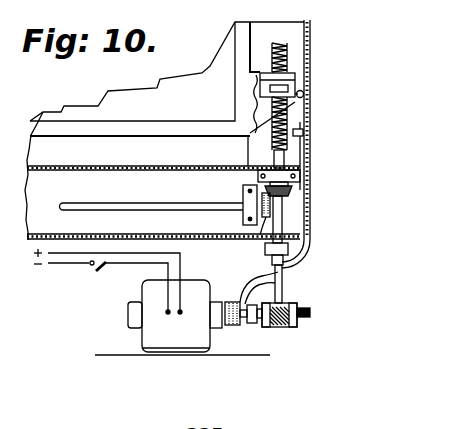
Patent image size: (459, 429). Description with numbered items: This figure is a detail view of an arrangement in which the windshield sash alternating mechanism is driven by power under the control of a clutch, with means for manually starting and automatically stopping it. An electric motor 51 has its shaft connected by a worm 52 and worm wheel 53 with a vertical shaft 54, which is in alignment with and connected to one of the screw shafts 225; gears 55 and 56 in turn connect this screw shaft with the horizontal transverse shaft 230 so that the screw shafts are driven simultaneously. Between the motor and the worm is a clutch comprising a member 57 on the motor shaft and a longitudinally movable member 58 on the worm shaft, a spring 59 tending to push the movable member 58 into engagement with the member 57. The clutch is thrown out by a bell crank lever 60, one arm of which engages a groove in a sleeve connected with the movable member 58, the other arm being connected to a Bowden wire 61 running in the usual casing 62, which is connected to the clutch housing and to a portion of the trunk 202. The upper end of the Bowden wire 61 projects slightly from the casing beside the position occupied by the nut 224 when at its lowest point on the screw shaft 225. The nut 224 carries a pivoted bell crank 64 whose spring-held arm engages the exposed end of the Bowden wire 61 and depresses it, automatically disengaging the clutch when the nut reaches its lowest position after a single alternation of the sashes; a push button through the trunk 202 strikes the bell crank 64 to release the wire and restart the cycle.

The electric motor 51 is at (148, 292).
The worm 52 is at (278, 325).
The worm wheel 53 is at (308, 312).
The vertical shaft 54 is at (293, 270).
The gear 55 is at (263, 230).
The gear 56 is at (293, 193).
The clutch member 57 is at (232, 326).
The longitudinally movable clutch member 58 is at (239, 324).
The spring 59 is at (253, 320).
The bell crank lever 60 is at (260, 293).
The Bowden wire 61 is at (302, 124).
The casing 62 is at (306, 250).
The pivoted bell crank 64 is at (304, 92).
The trunk 202 is at (311, 143).
The nut 224 is at (297, 80).
The screw shaft 225 is at (286, 52).
The horizontal transverse shaft 230 is at (112, 210).